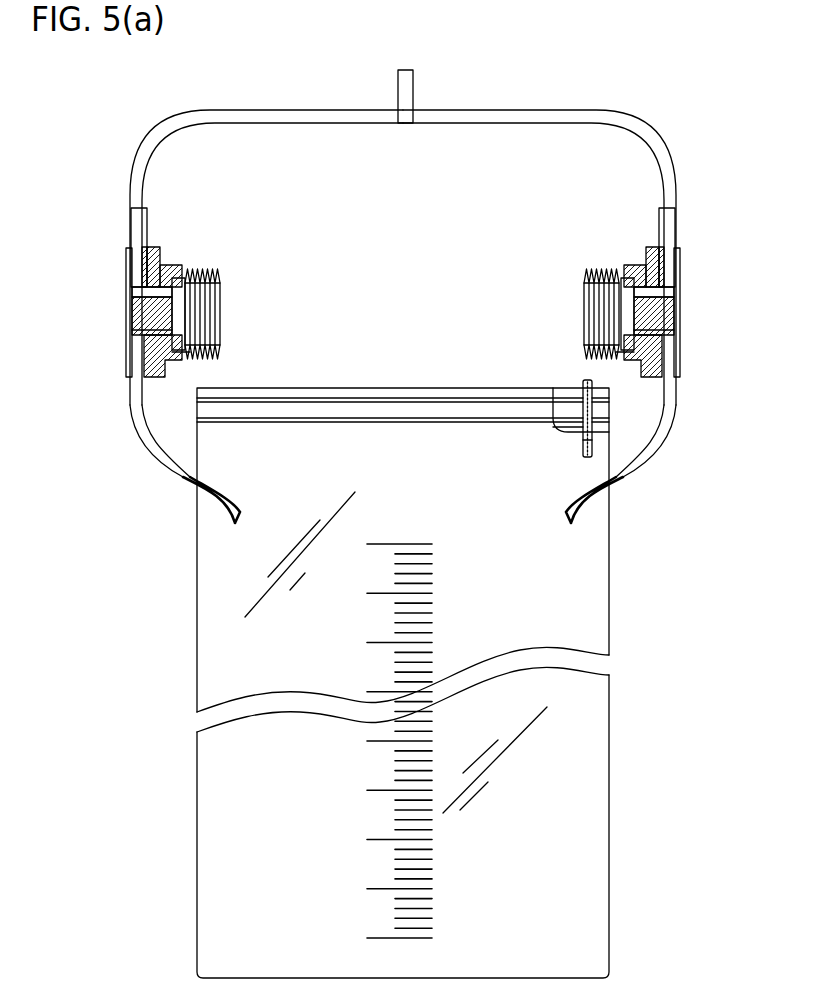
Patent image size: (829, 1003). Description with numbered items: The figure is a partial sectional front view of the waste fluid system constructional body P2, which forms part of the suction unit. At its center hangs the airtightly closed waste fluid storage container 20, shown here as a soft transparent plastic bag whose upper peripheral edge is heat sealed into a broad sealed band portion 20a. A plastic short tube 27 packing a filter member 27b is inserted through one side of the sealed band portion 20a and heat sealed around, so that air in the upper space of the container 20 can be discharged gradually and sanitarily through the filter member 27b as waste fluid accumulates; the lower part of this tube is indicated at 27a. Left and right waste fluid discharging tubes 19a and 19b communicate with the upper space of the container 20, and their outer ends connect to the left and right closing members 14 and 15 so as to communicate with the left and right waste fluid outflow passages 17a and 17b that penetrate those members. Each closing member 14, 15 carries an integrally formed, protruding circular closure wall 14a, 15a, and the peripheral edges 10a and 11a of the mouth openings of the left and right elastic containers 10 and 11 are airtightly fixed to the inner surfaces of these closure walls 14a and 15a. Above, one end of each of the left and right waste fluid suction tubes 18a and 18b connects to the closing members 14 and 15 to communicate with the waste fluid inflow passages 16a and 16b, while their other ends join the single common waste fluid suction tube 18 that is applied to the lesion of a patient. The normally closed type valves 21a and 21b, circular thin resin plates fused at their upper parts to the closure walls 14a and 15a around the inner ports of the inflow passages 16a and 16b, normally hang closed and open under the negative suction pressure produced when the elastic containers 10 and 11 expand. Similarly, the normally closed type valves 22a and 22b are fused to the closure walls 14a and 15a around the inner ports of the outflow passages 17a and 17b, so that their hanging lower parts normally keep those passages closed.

The left elastic container 10 is at (215, 305).
The peripheral edge of mouth opening of left elastic container 10a is at (190, 365).
The right elastic container 11 is at (585, 305).
The peripheral edge of mouth opening of right elastic container 11a is at (600, 358).
The left closing member 14 is at (128, 307).
The left circular closure wall 14a is at (170, 287).
The right closing member 15 is at (678, 302).
The right circular closure wall 15a is at (633, 275).
The left waste fluid inflow passage 16a is at (157, 287).
The right waste fluid inflow passage 16b is at (648, 285).
The left waste fluid outflow passage 17a is at (137, 363).
The right waste fluid outflow passage 17b is at (672, 390).
The common waste fluid suction tube 18 is at (413, 78).
The left waste fluid suction tube 18a is at (232, 110).
The right waste fluid suction tube 18b is at (607, 110).
The left waste fluid discharging tube 19a is at (163, 460).
The right waste fluid discharging tube 19b is at (630, 477).
The waste fluid storage container 20 is at (595, 760).
The sealed band portion 20a is at (400, 407).
The left normally closed type valve 21a is at (200, 288).
The right normally closed type valve 21b is at (585, 285).
The left normally closed type valve 22a is at (140, 332).
The right normally closed type valve 22b is at (660, 328).
The plastic short tube 27 is at (580, 384).
The clip lower part 27a is at (580, 440).
The filter member 27b is at (613, 443).
The waste fluid system constructional body P2 is at (694, 222).